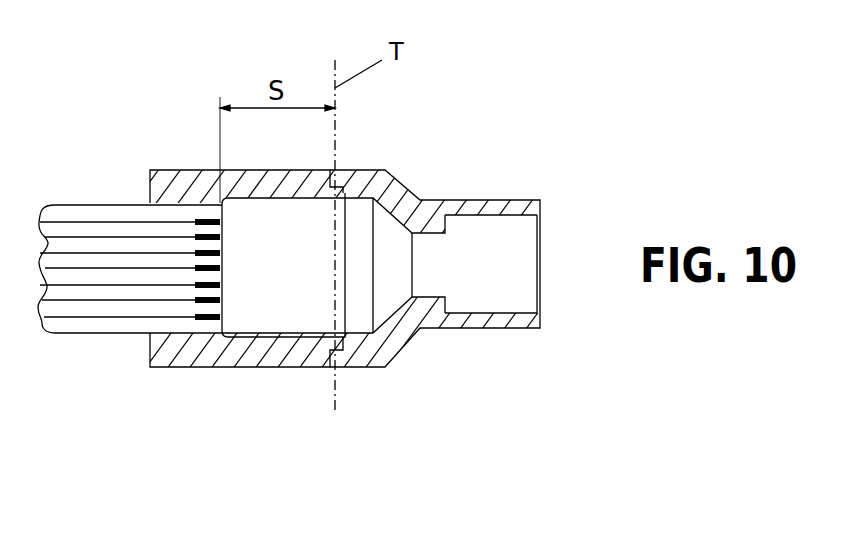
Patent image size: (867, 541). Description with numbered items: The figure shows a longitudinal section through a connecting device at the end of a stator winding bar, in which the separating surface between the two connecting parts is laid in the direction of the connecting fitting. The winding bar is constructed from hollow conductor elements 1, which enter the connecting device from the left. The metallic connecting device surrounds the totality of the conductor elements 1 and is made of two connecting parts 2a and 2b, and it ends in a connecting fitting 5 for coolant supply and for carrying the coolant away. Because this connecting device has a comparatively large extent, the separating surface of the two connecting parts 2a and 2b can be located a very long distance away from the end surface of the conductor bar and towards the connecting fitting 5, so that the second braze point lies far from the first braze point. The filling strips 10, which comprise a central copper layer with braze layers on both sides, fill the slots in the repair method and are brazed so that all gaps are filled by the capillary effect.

The hollow conductor elements 1 is at (170, 212).
The second filling strips 10 is at (210, 320).
The connecting part 2a is at (298, 347).
The connecting part 2b is at (402, 329).
The connecting fitting 5 is at (508, 209).